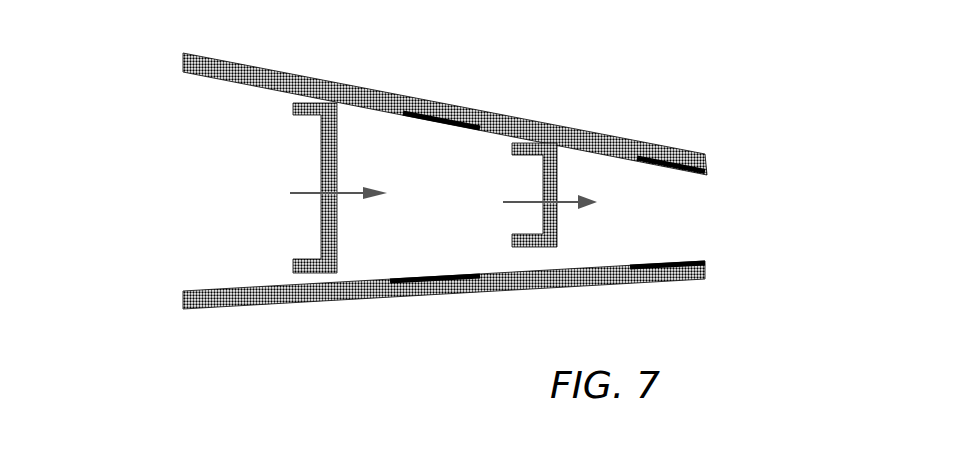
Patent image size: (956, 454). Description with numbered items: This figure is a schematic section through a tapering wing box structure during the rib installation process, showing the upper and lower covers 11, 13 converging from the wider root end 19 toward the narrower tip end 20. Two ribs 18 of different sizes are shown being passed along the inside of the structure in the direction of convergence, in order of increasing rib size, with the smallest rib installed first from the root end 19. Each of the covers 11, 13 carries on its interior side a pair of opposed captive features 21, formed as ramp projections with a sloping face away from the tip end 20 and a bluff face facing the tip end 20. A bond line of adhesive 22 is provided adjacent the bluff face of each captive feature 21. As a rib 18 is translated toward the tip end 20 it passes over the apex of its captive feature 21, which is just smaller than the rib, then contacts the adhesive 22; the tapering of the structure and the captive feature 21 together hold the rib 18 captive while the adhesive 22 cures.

The upper cover 11 is at (278, 82).
The lower cover 13 is at (233, 300).
The rib 18 is at (320, 143).
The root end 19 is at (150, 104).
The tip end 20 is at (731, 197).
The captive feature 21 is at (415, 115).
The adhesive 22 is at (462, 125).